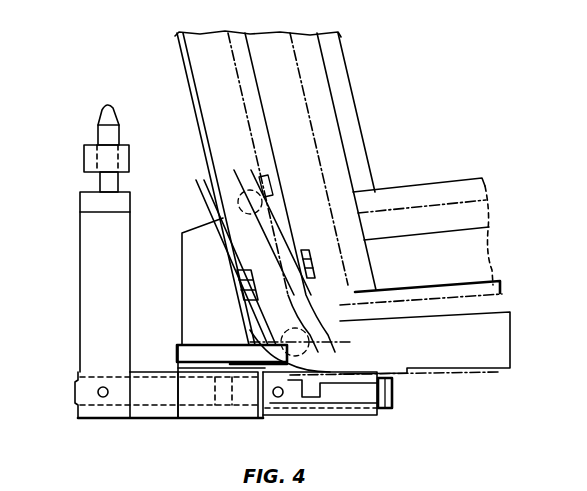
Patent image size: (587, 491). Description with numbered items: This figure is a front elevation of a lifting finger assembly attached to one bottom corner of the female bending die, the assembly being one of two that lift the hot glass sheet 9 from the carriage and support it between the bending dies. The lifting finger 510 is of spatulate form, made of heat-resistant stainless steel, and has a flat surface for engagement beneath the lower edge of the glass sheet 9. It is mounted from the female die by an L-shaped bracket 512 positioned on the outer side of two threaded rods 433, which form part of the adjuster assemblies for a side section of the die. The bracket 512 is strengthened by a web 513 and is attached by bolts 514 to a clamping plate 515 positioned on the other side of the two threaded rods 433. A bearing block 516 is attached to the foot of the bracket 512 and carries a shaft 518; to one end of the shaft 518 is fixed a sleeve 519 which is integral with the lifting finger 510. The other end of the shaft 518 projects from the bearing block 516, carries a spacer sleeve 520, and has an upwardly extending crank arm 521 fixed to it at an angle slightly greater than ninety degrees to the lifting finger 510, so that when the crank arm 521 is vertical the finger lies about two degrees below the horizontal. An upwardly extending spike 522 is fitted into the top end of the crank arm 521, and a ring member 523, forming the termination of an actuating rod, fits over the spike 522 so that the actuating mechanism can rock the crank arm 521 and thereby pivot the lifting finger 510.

The sheet of glass 9 is at (482, 372).
The threaded rods 433 is at (276, 192).
The lifting finger 510 is at (394, 388).
The L-shaped bracket 512 is at (241, 190).
The web 513 is at (198, 232).
The bolts 514 is at (300, 260).
The clamping plate 515 is at (287, 242).
The bearing block 516 is at (243, 414).
The shaft 518 is at (153, 411).
The sleeve 519 is at (360, 413).
The spacer sleeve 520 is at (152, 370).
The crank arm 521 is at (110, 263).
The spike 522 is at (111, 122).
The ring member 523 is at (125, 163).